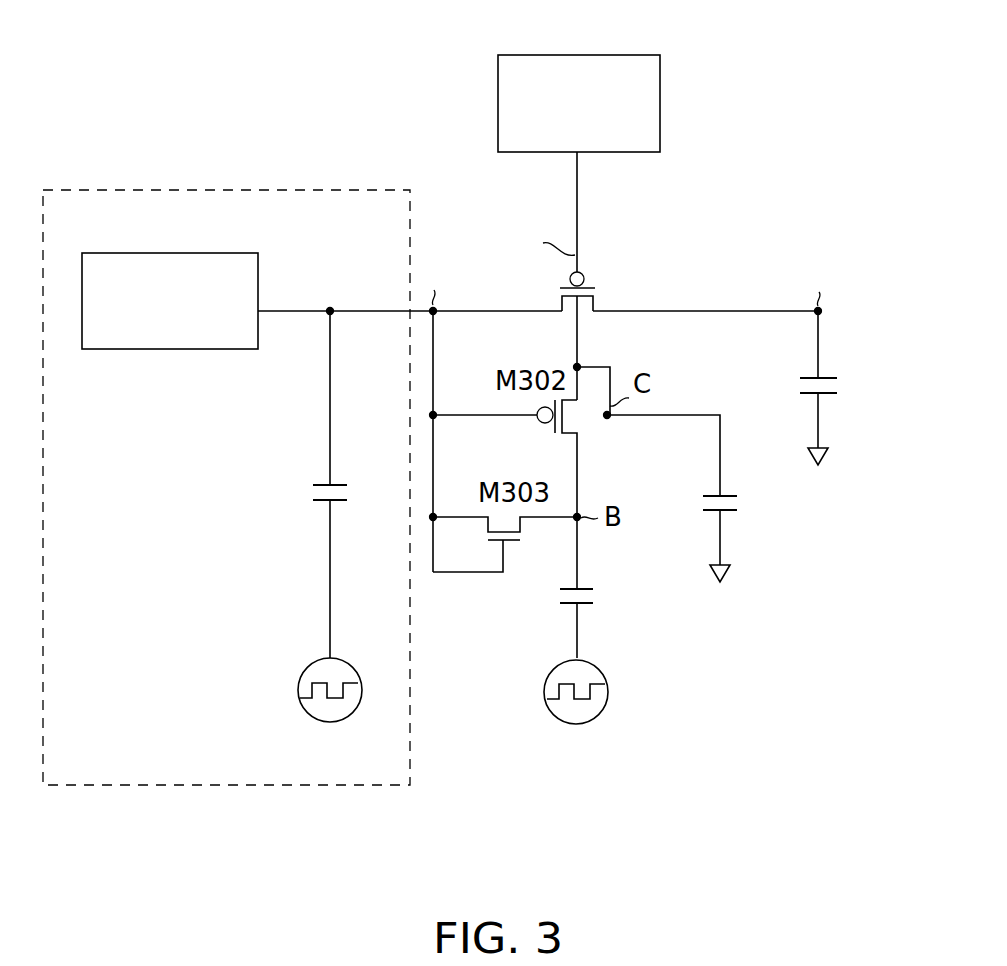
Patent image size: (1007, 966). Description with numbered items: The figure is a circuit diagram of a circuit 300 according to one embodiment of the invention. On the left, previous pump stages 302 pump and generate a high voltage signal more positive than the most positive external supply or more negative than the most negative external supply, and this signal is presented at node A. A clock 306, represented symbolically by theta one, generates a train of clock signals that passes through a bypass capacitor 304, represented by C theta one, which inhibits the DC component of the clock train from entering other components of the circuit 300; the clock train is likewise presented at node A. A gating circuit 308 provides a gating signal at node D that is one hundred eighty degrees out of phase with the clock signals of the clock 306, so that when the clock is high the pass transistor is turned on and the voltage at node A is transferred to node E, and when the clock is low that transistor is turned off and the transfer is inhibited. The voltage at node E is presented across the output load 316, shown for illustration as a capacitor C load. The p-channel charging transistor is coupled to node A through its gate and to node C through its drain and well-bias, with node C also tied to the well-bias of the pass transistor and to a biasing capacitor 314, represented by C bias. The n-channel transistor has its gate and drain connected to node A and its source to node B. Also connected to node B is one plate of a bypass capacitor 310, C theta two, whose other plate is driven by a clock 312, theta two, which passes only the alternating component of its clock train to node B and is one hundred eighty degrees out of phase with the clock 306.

The circuit 300 is at (372, 173).
The previous pump stages 302 is at (92, 189).
The bypass capacitor 304 is at (305, 495).
The clock 306 is at (293, 691).
The gating circuit 308 is at (532, 55).
The bypass capacitor 310 is at (600, 598).
The clock 312 is at (543, 693).
The biasing capacitor 314 is at (745, 505).
The output load 316 is at (843, 388).